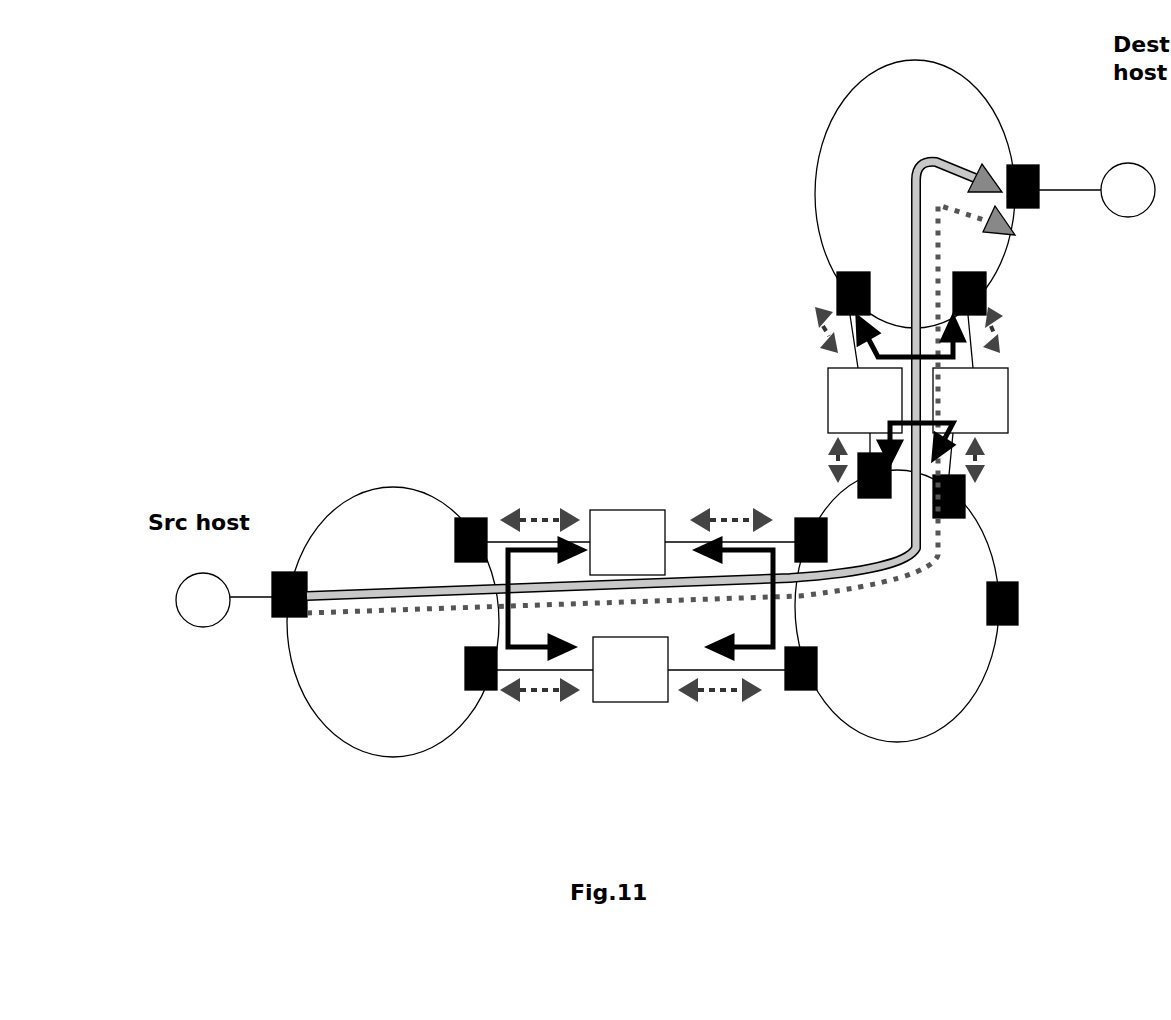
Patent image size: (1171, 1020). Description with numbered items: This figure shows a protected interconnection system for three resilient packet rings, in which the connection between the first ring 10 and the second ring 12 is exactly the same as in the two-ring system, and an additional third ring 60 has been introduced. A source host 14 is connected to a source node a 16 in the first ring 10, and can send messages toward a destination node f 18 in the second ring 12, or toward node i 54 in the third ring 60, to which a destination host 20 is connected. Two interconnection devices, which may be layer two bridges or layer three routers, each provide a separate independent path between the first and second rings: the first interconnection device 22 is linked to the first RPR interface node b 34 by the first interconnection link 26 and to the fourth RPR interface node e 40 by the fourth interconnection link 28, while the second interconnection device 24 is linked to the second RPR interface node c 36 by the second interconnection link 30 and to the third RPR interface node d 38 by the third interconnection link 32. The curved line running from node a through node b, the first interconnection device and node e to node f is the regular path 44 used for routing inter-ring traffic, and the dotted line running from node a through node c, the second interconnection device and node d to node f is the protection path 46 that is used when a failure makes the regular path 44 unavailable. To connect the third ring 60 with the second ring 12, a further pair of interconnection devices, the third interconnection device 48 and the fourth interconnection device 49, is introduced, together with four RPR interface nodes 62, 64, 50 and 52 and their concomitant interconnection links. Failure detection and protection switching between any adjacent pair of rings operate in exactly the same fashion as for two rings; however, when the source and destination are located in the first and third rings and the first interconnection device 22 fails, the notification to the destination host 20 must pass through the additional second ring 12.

The first RPR R1 10 is at (377, 755).
The second RPR R2 12 is at (900, 742).
The source host 14 is at (195, 627).
The source node a 16 is at (283, 617).
The destination node f 18 is at (1003, 625).
The destination host 20 is at (1128, 217).
The first interconnection device S1 22 is at (600, 512).
The second interconnection device S2 24 is at (615, 702).
The first interconnection link S1-b 26 is at (498, 540).
The fourth interconnection link S1-e 28 is at (687, 543).
The second interconnection link S2-c 30 is at (582, 668).
The third interconnection link S2-d 32 is at (703, 668).
The first RPR interface node b 34 is at (478, 520).
The second RPR interface node c 36 is at (475, 690).
The third RPR interface node d 38 is at (795, 690).
The fourth RPR interface node e 40 is at (797, 520).
The regular path 44 is at (917, 197).
The protection path 46 is at (930, 555).
The interconnection device S3 48 is at (828, 370).
The interconnection device S4 49 is at (1008, 398).
The RPR interface node g 50 is at (837, 293).
The RPR interface node h 52 is at (987, 315).
The node i 54 is at (1038, 208).
The third RPR R3 60 is at (830, 120).
The RPR interface node 62 is at (965, 488).
The RPR interface node 64 is at (857, 478).